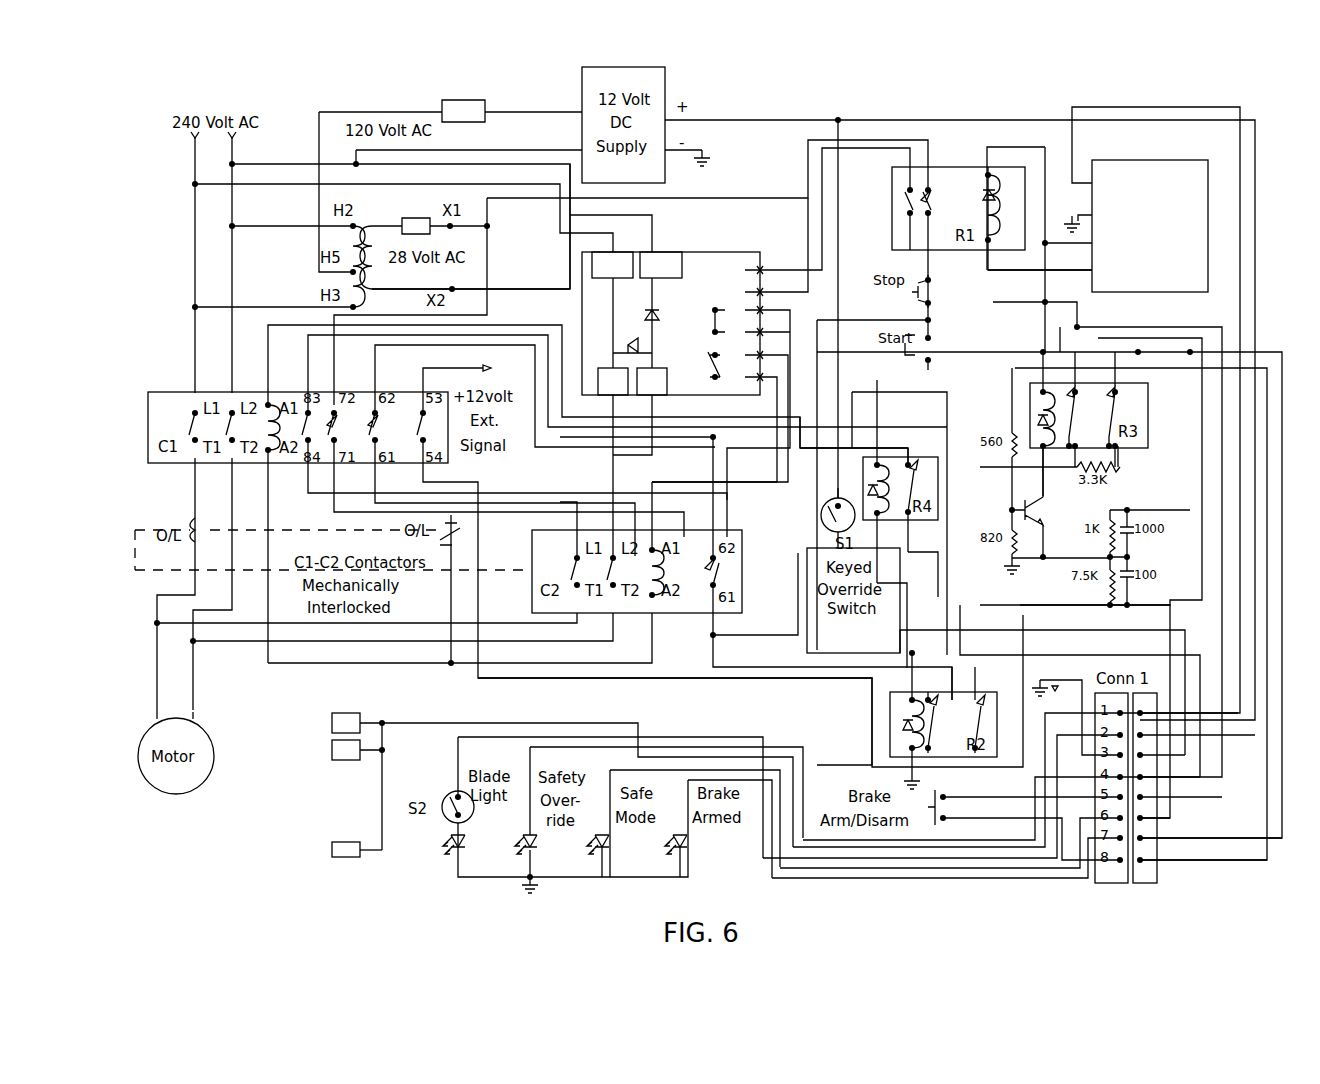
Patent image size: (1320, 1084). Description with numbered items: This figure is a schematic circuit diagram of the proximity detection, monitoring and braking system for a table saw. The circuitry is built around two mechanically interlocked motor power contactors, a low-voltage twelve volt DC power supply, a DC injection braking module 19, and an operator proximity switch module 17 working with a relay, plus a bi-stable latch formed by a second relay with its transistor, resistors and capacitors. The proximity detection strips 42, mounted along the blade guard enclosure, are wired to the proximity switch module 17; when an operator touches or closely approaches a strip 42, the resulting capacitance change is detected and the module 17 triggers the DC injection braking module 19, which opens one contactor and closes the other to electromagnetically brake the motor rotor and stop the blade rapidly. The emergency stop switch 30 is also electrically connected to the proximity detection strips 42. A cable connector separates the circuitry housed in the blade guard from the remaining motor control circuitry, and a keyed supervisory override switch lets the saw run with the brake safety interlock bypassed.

The proximity switch module 17 is at (1100, 160).
The DC injection braking module 19 is at (760, 252).
The proximity detection strips 42 is at (342, 713).
The emergency stop switch 30 is at (332, 844).